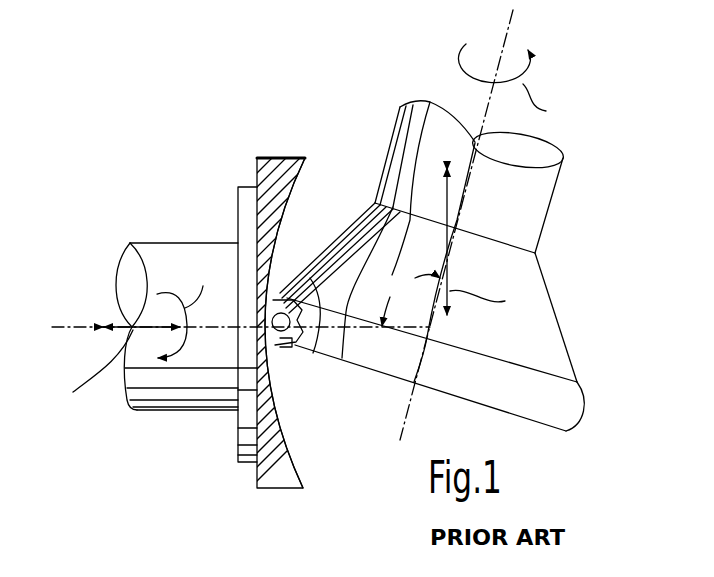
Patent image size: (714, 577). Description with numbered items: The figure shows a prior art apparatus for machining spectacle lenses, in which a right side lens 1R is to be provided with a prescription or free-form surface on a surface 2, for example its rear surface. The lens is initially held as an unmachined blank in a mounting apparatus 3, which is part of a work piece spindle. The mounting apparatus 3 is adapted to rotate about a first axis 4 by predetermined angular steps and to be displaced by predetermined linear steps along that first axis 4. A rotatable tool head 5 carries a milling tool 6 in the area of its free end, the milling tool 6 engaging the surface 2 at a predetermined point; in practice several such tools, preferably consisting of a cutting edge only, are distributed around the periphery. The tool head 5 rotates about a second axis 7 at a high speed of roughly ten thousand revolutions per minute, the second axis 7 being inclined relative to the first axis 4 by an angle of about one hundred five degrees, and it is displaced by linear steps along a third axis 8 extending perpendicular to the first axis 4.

The right side lens 1R is at (284, 178).
The surface 2 is at (291, 195).
The mounting apparatus 3 is at (177, 395).
The first axis 4 is at (73, 327).
The tool head 5 is at (560, 328).
The milling tool 6 is at (278, 300).
The second axis 7 is at (480, 97).
The third axis 8 is at (450, 193).